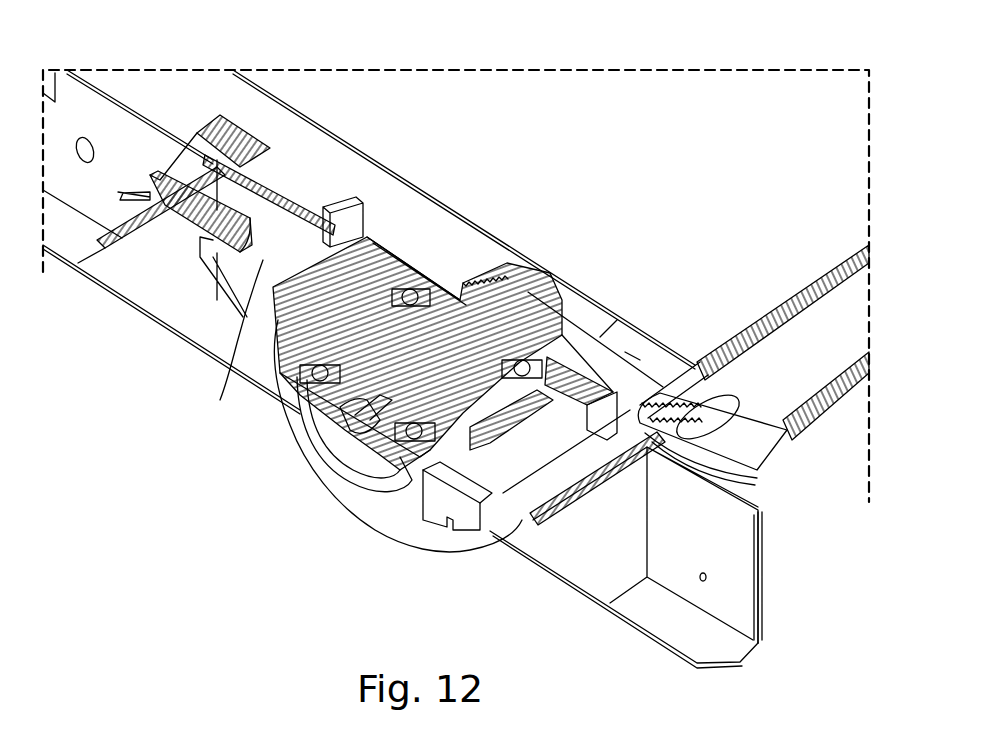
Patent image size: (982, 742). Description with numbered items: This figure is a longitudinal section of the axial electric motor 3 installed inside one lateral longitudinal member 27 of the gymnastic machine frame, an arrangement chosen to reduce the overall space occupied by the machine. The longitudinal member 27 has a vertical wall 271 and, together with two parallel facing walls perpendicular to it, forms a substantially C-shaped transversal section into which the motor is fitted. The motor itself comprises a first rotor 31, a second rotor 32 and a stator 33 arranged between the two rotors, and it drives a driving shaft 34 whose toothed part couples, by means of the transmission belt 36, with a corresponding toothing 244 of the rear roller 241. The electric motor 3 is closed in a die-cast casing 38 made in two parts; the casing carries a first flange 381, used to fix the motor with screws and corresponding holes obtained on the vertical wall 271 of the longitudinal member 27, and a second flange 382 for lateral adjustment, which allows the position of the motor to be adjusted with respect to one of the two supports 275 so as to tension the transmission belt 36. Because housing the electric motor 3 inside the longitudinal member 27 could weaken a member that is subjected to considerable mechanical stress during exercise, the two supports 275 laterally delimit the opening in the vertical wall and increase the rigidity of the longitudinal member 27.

The electric motor 3 is at (310, 528).
The lateral longitudinal member 27 is at (780, 545).
The vertical wall 271 is at (745, 592).
The first rotor 31 is at (262, 318).
The second rotor 32 is at (287, 338).
The stator 33 is at (285, 363).
The driving shaft 34 is at (408, 400).
The transmission belt 36 is at (773, 463).
The die-cast casing 38 is at (430, 548).
The rear roller 241 is at (833, 393).
The toothing 244 is at (787, 443).
The supports 275 is at (153, 270).
The first flange 381 is at (413, 98).
The second flange 382 is at (237, 273).